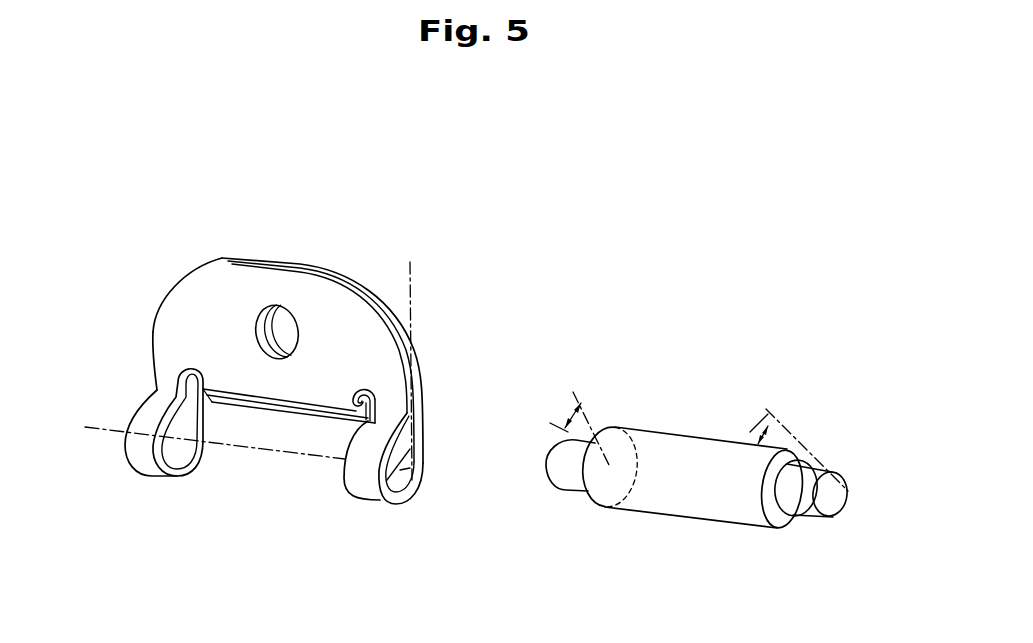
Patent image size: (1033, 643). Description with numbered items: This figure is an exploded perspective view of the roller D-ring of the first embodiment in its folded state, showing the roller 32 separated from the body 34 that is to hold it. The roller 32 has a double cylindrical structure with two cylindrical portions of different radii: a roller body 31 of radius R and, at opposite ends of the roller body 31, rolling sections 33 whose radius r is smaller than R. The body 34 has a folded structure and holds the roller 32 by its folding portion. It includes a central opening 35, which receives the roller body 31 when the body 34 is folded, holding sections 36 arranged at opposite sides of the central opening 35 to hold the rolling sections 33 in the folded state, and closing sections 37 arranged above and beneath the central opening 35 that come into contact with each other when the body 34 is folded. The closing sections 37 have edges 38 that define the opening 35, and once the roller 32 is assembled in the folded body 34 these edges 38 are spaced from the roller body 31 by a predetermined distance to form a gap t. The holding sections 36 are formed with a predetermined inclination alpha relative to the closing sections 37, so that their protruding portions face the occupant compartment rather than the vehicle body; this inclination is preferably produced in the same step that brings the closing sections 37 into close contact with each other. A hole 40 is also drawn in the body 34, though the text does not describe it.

The roller body 31 is at (697, 487).
The roller 32 is at (722, 412).
The rolling sections 33 is at (568, 472).
The body 34 is at (362, 266).
The central opening 35 is at (300, 460).
The holding sections 36 is at (143, 460).
The closing sections 37 is at (197, 304).
The edges 38 is at (287, 408).
The hole 40 is at (285, 326).